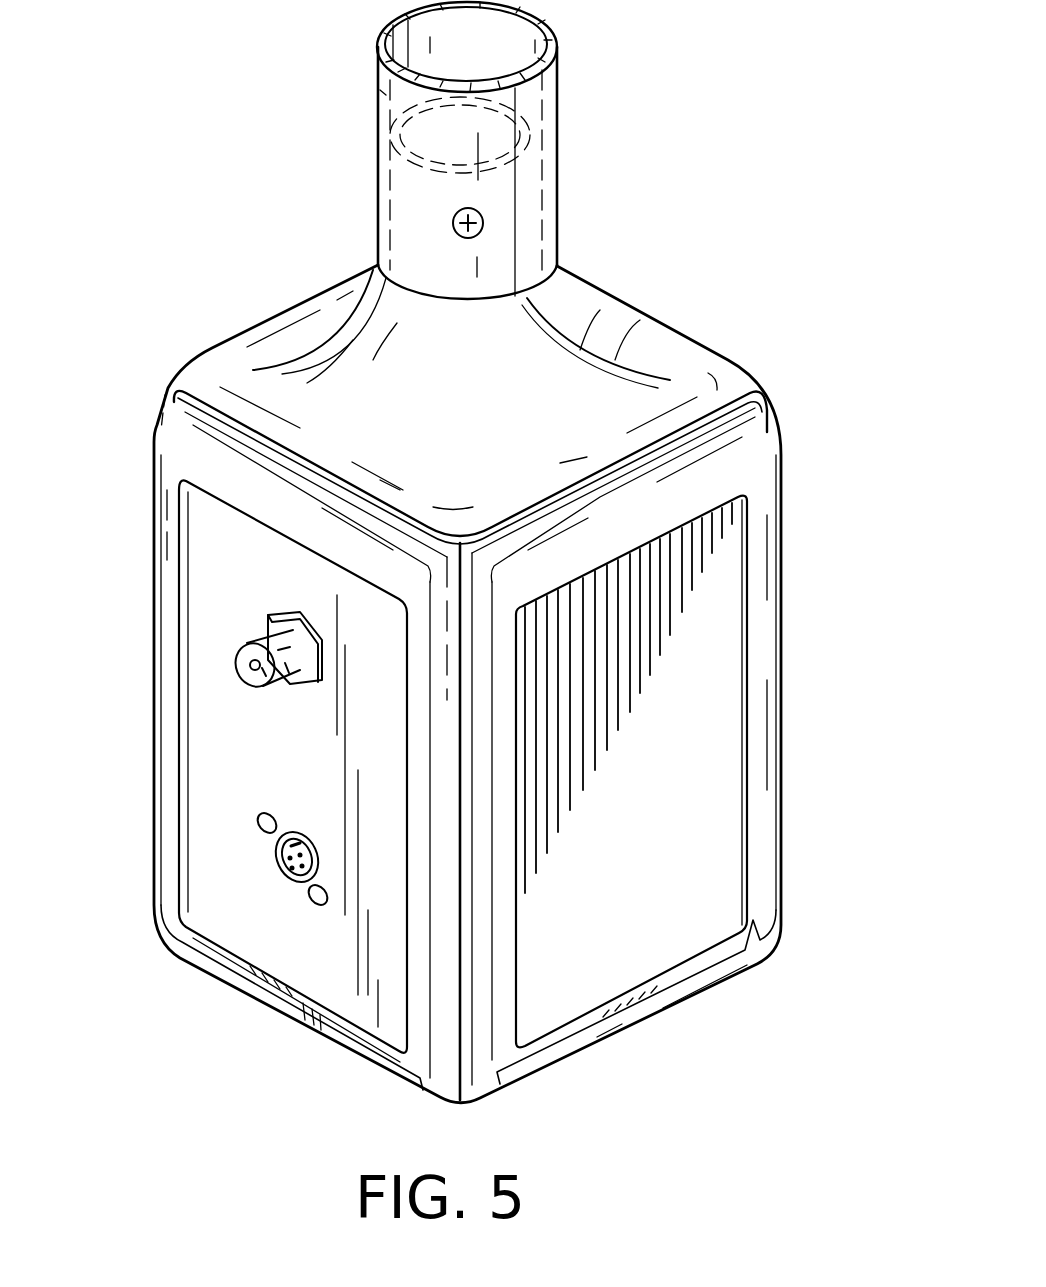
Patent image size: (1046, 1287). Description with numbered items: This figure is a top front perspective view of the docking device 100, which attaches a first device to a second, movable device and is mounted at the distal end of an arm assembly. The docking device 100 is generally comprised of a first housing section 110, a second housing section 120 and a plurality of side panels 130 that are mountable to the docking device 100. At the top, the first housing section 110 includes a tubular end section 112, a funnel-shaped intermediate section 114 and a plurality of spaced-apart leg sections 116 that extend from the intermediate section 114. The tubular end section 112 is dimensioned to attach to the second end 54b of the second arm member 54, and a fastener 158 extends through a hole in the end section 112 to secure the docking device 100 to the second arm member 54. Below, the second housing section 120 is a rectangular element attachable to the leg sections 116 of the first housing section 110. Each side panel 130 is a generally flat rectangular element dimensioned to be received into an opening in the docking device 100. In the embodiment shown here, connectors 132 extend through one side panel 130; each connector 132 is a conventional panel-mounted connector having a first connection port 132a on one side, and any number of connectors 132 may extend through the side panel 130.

The docking device 100 is at (840, 336).
The first housing section 110 is at (792, 459).
The tubular end section 112 is at (530, 183).
The intermediate section 114 is at (590, 338).
The leg section 116 is at (145, 538).
The second housing section 120 is at (688, 1012).
The side panel 130 is at (265, 935).
The connector 132 is at (247, 645).
The first connection port 132a is at (257, 668).
The fastener 158 is at (453, 223).
The second arm member 54 is at (576, 67).
The second end 54b is at (383, 92).